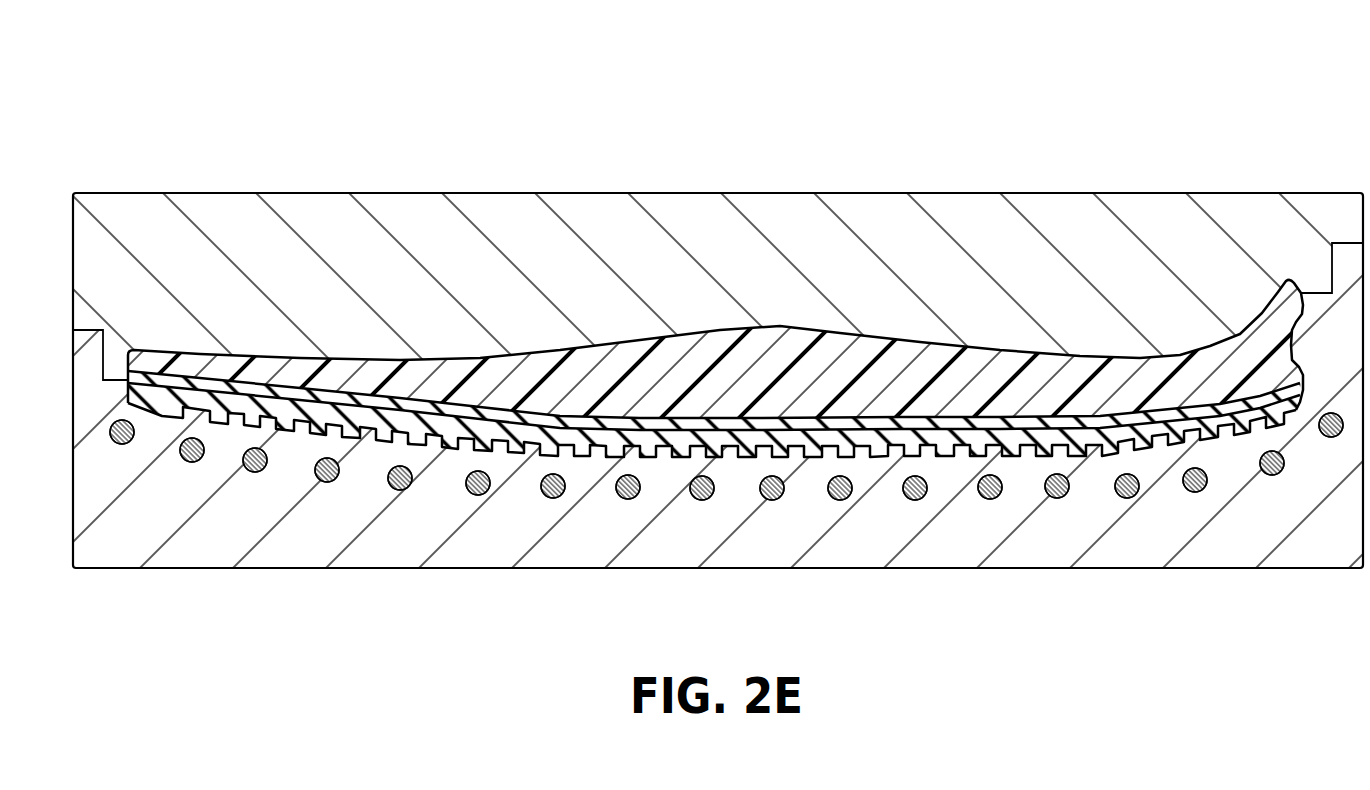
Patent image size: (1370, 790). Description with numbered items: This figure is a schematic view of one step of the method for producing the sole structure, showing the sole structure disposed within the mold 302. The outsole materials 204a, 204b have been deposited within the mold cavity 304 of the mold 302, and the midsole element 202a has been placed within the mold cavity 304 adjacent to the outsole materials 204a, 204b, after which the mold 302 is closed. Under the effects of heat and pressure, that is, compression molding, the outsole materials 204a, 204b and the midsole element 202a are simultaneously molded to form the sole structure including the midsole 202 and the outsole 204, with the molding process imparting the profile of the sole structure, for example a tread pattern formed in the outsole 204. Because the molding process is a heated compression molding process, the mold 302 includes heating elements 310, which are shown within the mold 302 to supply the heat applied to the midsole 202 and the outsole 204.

The mold 302 is at (289, 96).
The mold cavity 304 is at (433, 378).
The midsole 202 is at (685, 395).
The midsole element 202a is at (617, 362).
The outsole 204 is at (685, 395).
The outsole material 204a is at (378, 424).
The outsole material 204b is at (433, 425).
The heating elements 310 is at (843, 497).